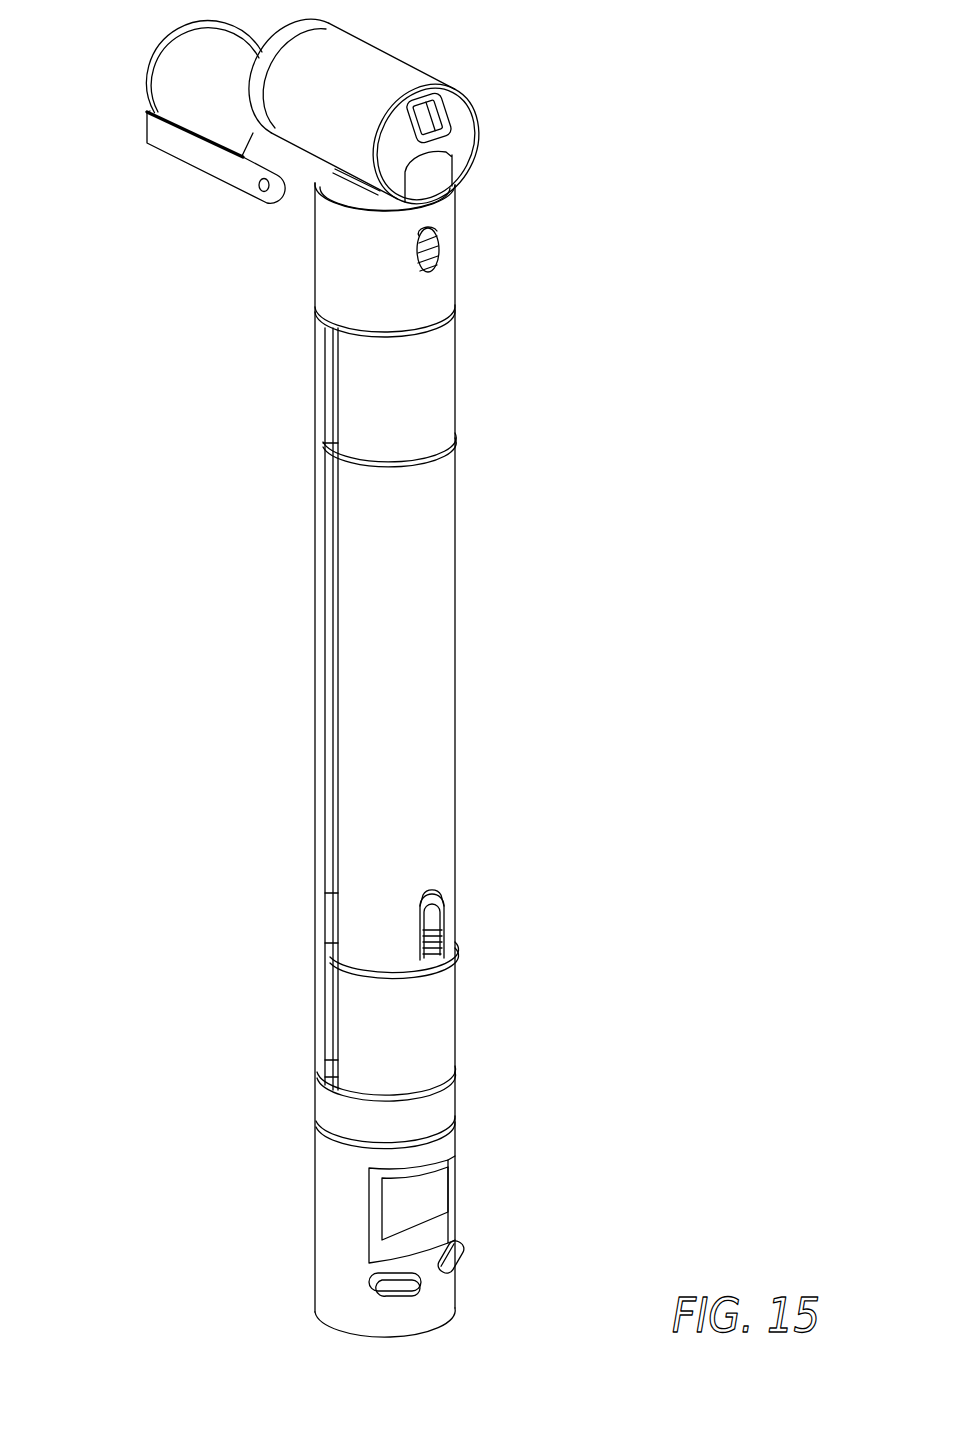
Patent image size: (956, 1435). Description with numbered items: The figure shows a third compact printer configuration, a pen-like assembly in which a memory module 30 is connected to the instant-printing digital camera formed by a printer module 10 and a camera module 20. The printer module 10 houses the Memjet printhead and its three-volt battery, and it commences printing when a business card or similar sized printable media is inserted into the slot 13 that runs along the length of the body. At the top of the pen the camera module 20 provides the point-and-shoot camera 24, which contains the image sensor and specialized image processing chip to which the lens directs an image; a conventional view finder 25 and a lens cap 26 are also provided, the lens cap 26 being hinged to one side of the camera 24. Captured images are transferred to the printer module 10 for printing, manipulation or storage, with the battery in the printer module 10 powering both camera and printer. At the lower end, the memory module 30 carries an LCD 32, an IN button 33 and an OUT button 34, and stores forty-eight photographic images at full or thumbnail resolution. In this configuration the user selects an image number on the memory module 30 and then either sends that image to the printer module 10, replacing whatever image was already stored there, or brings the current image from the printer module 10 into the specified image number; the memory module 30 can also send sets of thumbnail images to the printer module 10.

The printer module 10 is at (455, 610).
The slot 13 is at (325, 773).
The camera module 20 is at (313, 277).
The camera 24 is at (440, 70).
The view finder 25 is at (440, 123).
The lens cap 26 is at (160, 110).
The memory module 30 is at (316, 1190).
The LCD 32 is at (423, 1190).
The IN button 33 is at (410, 1290).
The OUT button 34 is at (457, 1265).